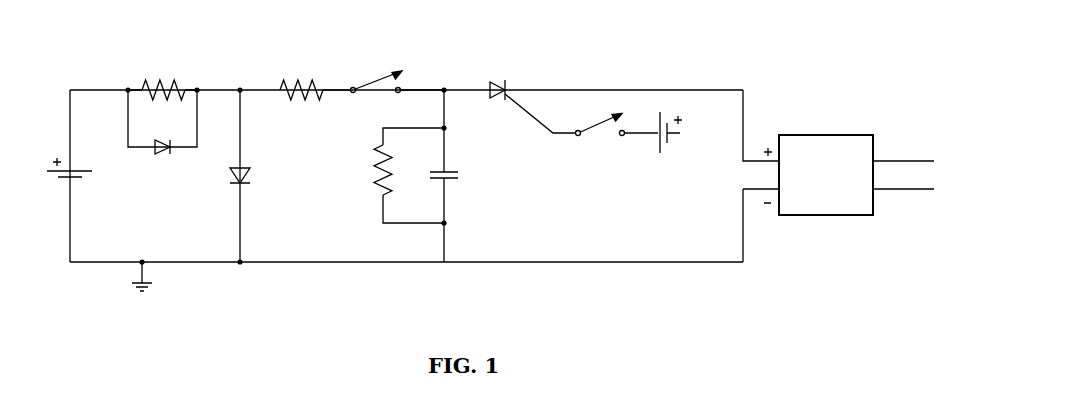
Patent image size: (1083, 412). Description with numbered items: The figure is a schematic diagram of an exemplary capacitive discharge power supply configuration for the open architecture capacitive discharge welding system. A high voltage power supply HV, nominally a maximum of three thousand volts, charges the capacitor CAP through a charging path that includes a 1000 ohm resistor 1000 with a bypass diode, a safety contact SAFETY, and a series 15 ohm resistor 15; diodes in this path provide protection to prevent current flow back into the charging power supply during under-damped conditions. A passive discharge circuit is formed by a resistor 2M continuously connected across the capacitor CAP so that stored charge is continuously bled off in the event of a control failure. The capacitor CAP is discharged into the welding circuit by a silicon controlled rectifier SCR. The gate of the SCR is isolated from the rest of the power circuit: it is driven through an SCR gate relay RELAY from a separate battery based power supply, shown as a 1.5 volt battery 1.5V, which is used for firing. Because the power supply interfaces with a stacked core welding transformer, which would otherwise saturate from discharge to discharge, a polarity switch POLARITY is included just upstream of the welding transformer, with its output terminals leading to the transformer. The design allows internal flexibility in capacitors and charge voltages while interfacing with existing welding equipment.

The high voltage power supply HV is at (54, 172).
The 1000 Ω resistor 1000 is at (162, 107).
The 15 Ω resistor 15 is at (301, 103).
The safety contact SAFETY is at (383, 57).
The 2 MΩ resistor 2M is at (389, 175).
The capacitor CAP is at (466, 176).
The silicon controlled rectifier SCR is at (497, 79).
The SCR gate relay RELAY is at (581, 141).
The 1.5 V battery 1.5V is at (691, 132).
The polarity switch POLARITY is at (849, 153).